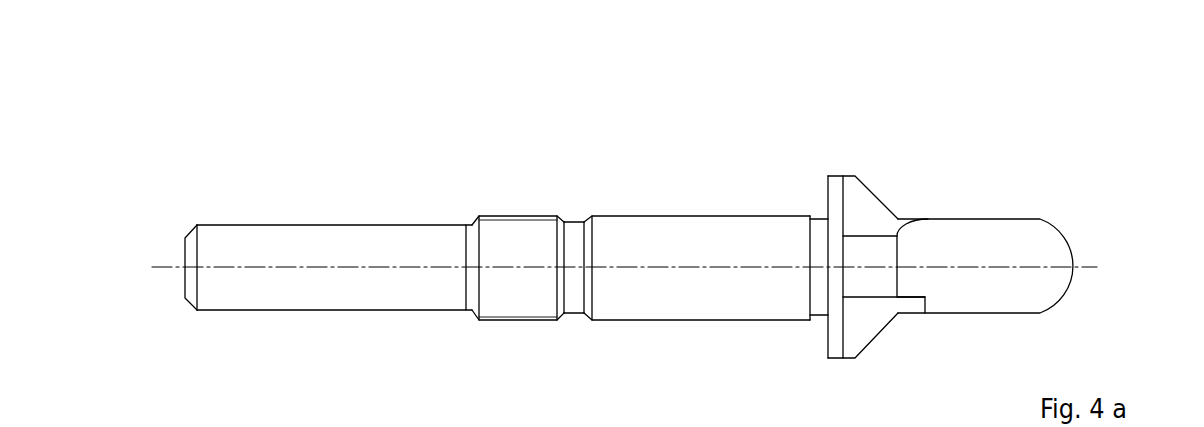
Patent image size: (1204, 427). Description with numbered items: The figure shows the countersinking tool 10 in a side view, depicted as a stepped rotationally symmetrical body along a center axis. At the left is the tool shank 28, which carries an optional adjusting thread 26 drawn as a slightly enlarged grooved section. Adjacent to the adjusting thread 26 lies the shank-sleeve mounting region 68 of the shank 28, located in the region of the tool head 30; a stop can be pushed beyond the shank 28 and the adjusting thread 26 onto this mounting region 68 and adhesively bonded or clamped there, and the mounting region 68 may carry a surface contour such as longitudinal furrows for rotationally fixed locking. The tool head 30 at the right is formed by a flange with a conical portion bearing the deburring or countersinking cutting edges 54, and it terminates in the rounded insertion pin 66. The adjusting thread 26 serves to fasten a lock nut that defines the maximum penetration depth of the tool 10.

The countersinking tool 10 is at (662, 231).
The tool shank 28 is at (343, 241).
The adjusting thread 26 is at (513, 221).
The shank-sleeve mounting region 68 is at (695, 226).
The tool head 30 is at (880, 337).
The countersinking cutting edges 54 is at (877, 196).
The rounded insertion pin 66 is at (1053, 293).